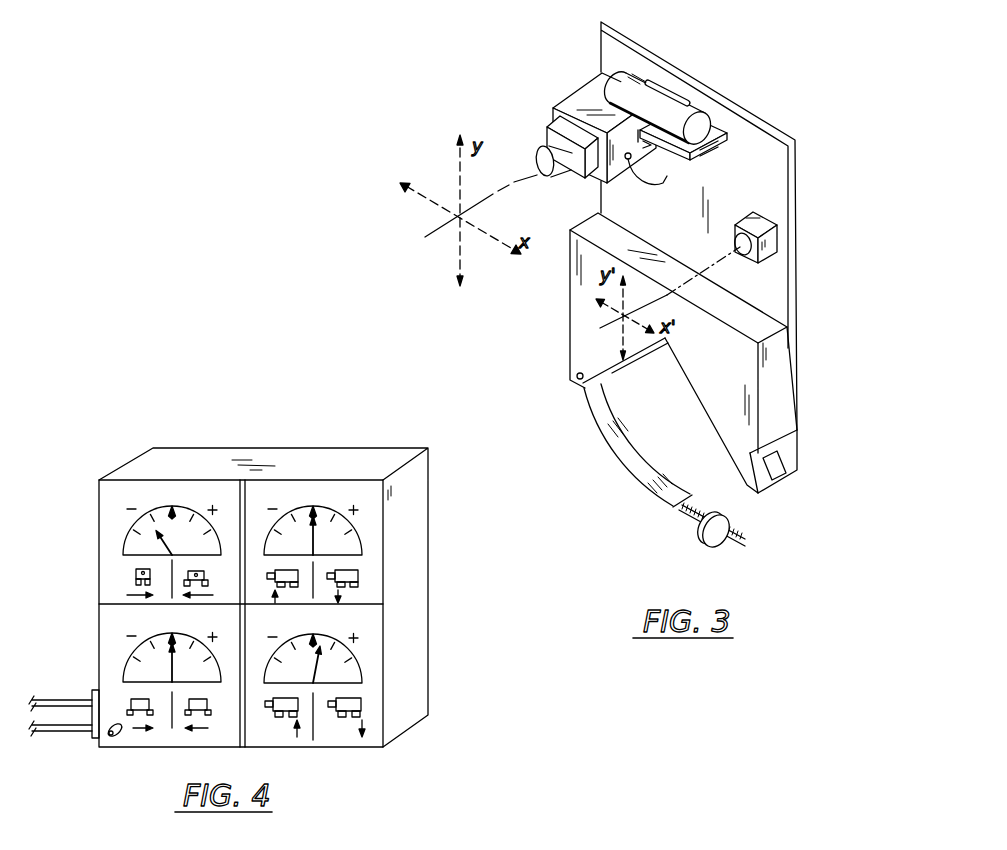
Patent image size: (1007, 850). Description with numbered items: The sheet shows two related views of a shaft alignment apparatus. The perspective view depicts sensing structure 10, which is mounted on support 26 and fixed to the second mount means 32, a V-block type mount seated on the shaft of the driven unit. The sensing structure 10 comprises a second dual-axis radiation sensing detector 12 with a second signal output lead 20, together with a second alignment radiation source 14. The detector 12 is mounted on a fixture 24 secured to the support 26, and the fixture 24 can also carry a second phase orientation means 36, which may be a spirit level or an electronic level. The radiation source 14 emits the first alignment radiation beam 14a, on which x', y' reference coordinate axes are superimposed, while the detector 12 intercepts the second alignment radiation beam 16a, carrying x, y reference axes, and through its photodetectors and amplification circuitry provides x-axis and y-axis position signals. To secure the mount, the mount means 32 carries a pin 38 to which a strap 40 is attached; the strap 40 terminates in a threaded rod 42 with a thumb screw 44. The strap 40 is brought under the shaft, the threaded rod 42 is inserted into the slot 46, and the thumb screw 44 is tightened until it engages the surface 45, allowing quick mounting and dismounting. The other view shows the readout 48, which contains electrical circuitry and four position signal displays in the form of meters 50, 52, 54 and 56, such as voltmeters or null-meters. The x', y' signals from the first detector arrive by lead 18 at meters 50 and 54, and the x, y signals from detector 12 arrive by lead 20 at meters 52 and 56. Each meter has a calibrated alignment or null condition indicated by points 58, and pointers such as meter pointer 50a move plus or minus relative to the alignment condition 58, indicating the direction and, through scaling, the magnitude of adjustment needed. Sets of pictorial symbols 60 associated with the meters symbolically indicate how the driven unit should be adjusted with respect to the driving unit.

In FIG. 3, the sensing structure 10 is at (533, 110).
In FIG. 3, the second dual-axis radiation sensing detector 12 is at (573, 103).
In FIG. 3, the second alignment radiation source 14 is at (772, 242).
In FIG. 3, the first alignment radiation beam 14a is at (683, 280).
In FIG. 3, the second alignment radiation beam 16a is at (486, 202).
In FIG. 4, the first signal output lead 18 is at (53, 734).
In FIG. 3, the second signal output lead 20 is at (646, 185).
In FIG. 4, the second signal output lead 20 is at (49, 700).
In FIG. 3, the fixture 24 is at (597, 85).
In FIG. 3, the support 26 is at (641, 41).
In FIG. 3, the second mount means 32 is at (797, 388).
In FIG. 3, the second phase orientation means 36 is at (689, 110).
In FIG. 3, the pin 38 is at (576, 376).
In FIG. 3, the strap 40 is at (632, 477).
In FIG. 3, the threaded rod 42 is at (687, 517).
In FIG. 3, the thumb screw 44 is at (705, 541).
In FIG. 3, the surface 45 is at (788, 460).
In FIG. 3, the slot 46 is at (776, 480).
In FIG. 4, the readout 48 is at (265, 450).
In FIG. 4, the meter 50 is at (127, 538).
In FIG. 4, the meter pointer 50a is at (158, 541).
In FIG. 4, the meter 52 is at (128, 663).
In FIG. 4, the meter 54 is at (356, 546).
In FIG. 4, the meter 56 is at (356, 677).
In FIG. 4, the alignment condition points 58 is at (170, 506).
In FIG. 4, the pictorial symbols 60 is at (347, 576).